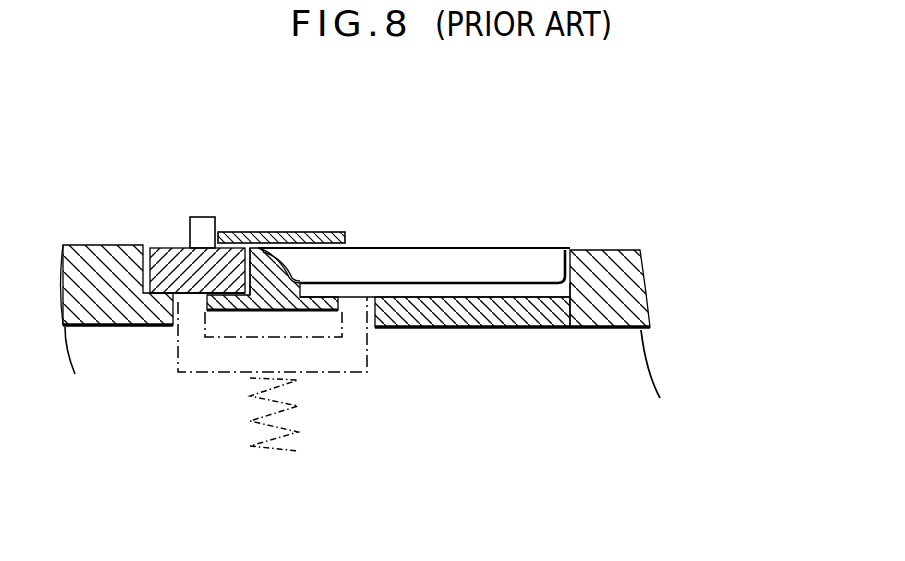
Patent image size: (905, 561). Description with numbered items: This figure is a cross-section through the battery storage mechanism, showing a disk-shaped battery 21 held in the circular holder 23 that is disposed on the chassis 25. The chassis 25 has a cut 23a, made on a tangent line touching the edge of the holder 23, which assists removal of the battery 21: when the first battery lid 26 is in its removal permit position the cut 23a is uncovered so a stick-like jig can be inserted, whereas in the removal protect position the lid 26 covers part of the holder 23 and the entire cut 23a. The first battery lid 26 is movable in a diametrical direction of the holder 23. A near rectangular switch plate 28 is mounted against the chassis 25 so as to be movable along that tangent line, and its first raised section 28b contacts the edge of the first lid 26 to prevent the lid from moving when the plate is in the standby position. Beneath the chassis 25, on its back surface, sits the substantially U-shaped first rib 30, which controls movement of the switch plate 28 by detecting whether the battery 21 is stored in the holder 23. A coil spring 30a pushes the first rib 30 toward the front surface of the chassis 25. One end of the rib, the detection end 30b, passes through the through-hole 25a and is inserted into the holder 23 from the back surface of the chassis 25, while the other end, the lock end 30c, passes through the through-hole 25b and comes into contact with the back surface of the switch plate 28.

The battery 21 is at (500, 259).
The holder 23 is at (571, 330).
The cut 23a is at (277, 256).
The chassis 25 is at (80, 245).
The through-hole 25a is at (373, 328).
The through-hole 25b is at (173, 330).
The first battery lid 26 is at (323, 234).
The switch plate 28 is at (171, 270).
The first raised section 28b is at (205, 226).
The first rib 30 is at (360, 376).
The coil spring 30a is at (293, 452).
The detection end 30b is at (362, 329).
The lock end 30c is at (192, 332).